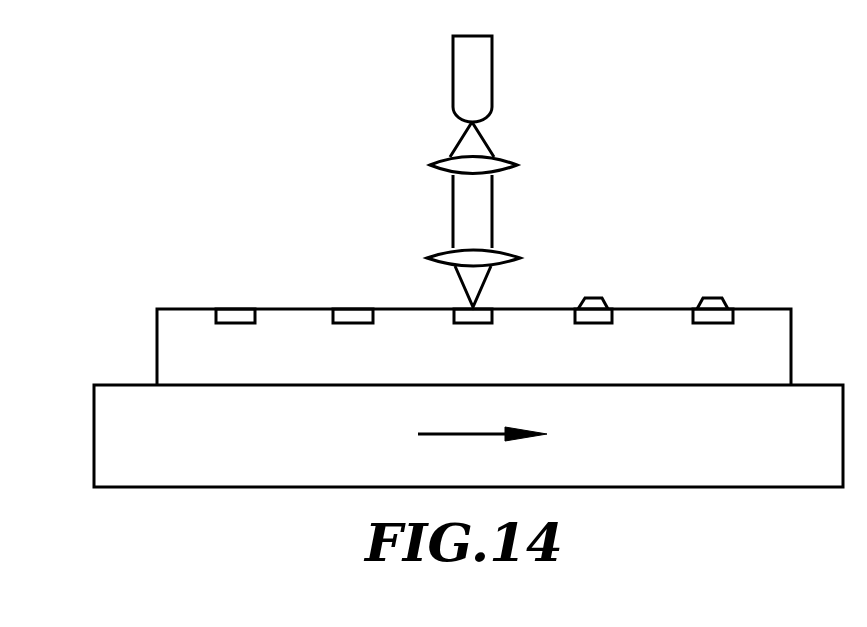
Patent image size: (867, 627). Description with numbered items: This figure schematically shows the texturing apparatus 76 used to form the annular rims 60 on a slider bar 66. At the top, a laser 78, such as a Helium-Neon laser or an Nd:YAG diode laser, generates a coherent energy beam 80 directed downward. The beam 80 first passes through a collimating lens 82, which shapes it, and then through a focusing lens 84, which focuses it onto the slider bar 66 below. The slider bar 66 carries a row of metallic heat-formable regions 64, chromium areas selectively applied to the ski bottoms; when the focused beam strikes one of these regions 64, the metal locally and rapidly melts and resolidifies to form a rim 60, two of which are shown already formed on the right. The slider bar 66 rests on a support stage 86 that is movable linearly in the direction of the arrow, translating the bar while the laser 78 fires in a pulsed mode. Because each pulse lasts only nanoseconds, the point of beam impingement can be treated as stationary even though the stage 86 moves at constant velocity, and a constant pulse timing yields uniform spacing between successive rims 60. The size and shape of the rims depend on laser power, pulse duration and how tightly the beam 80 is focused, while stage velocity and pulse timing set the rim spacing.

The annular rims 60 is at (713, 299).
The metallic heat-formable regions 64 is at (352, 313).
The slider bar 66 is at (182, 333).
The apparatus 76 is at (403, 101).
The laser 78 is at (483, 79).
The coherent energy beam 80 is at (480, 213).
The collimating lens 82 is at (447, 163).
The focusing lens 84 is at (498, 257).
The support stage 86 is at (122, 437).